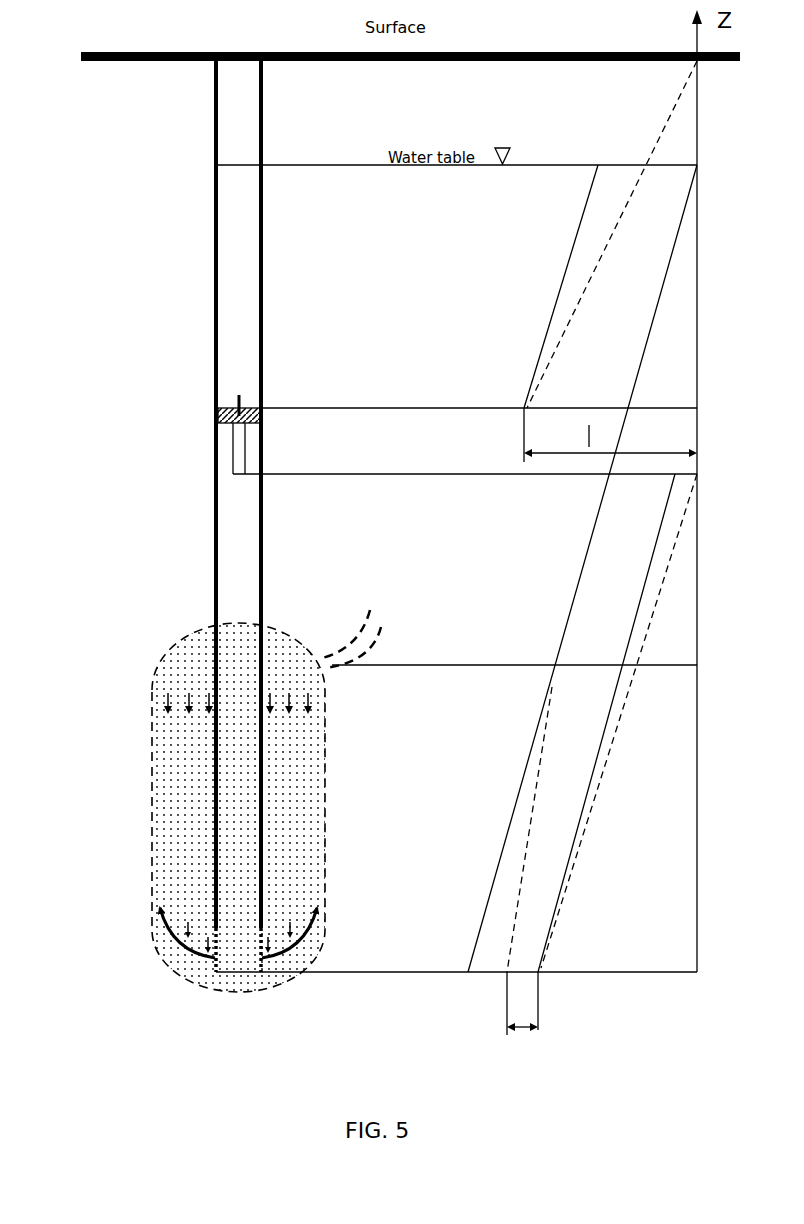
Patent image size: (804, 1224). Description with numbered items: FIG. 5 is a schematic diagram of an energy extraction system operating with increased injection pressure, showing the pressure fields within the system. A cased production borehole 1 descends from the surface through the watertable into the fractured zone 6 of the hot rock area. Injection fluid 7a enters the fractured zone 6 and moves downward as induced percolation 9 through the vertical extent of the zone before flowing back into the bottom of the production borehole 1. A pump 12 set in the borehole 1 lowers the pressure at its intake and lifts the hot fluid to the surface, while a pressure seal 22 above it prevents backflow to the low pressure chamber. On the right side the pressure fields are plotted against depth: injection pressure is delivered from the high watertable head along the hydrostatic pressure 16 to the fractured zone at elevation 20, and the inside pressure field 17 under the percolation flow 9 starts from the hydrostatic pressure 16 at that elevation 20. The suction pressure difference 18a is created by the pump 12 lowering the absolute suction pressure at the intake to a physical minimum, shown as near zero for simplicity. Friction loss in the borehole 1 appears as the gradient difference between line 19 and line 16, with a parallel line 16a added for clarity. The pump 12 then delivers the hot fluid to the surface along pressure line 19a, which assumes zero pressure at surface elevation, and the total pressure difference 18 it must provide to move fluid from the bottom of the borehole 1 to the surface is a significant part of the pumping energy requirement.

The production borehole 1 is at (216, 505).
The fractured zone 6 is at (177, 783).
The injection fluid 7a is at (344, 646).
The induced percolation 9 is at (190, 693).
The pump 12 is at (233, 447).
The hydrostatic pressure 16 is at (497, 866).
The parallel line to hydrostatic pressure 16a is at (632, 633).
The inside pressure field 17 is at (510, 942).
The total pressure difference 18 is at (609, 435).
The suction pressure difference 18a is at (538, 1032).
The delivery pressure line 19 is at (578, 843).
The pressure line to surface 19a is at (585, 288).
The injection pressure elevation 20 is at (403, 665).
The pressure seal 22 is at (225, 410).